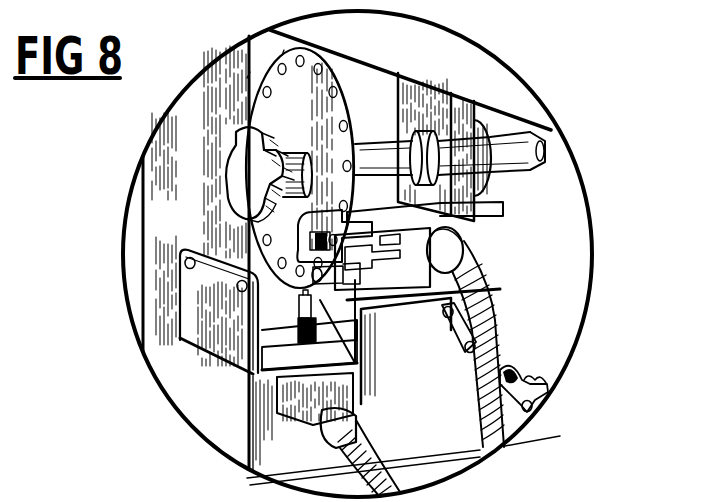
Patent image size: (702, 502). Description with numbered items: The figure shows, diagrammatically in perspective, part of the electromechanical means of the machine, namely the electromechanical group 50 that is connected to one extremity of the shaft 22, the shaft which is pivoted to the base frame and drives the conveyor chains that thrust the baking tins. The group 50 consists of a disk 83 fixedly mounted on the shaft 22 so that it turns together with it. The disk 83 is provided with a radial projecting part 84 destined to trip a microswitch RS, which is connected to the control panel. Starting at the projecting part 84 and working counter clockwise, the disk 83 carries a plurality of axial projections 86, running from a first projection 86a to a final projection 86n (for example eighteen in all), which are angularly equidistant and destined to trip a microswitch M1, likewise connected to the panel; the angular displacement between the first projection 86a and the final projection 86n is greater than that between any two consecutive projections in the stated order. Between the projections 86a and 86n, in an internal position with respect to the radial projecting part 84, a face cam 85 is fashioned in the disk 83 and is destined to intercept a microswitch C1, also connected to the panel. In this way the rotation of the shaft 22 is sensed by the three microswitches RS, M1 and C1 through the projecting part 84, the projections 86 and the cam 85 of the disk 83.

The electromechanical group 50 is at (522, 64).
The disk 83 is at (300, 168).
The face cam 85 is at (252, 250).
The axial projections 86 is at (282, 55).
The first axial projection 86a is at (257, 278).
The final axial projection 86n is at (353, 373).
The shaft 22 is at (528, 147).
The radial projecting part 84 is at (262, 316).
The microswitch RS is at (262, 371).
The microswitch C1 is at (428, 213).
The microswitch M1 is at (496, 323).